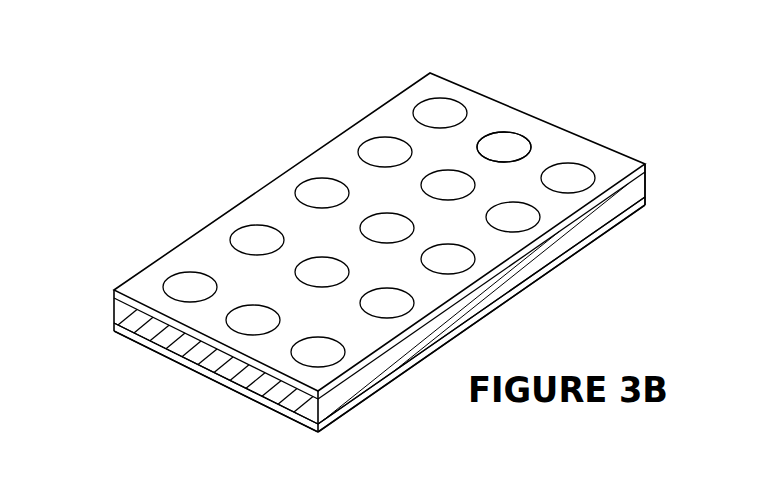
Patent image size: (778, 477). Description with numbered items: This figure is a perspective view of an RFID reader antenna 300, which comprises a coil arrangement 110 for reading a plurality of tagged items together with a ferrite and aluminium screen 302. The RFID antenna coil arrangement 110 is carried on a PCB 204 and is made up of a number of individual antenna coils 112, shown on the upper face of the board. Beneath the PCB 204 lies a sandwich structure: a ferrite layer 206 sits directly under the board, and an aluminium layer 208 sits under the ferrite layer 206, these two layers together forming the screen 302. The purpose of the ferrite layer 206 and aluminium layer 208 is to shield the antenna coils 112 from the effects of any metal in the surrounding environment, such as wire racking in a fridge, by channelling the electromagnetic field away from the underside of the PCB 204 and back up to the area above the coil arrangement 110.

The RFID reader antenna 300 is at (381, 238).
The RFID antenna coil arrangement 110 is at (332, 165).
The antenna coils 112 is at (517, 138).
The PCB 204 is at (158, 265).
The ferrite layer 206 is at (104, 312).
The aluminium layer 208 is at (330, 432).
The ferrite and aluminium screen 302 is at (660, 162).